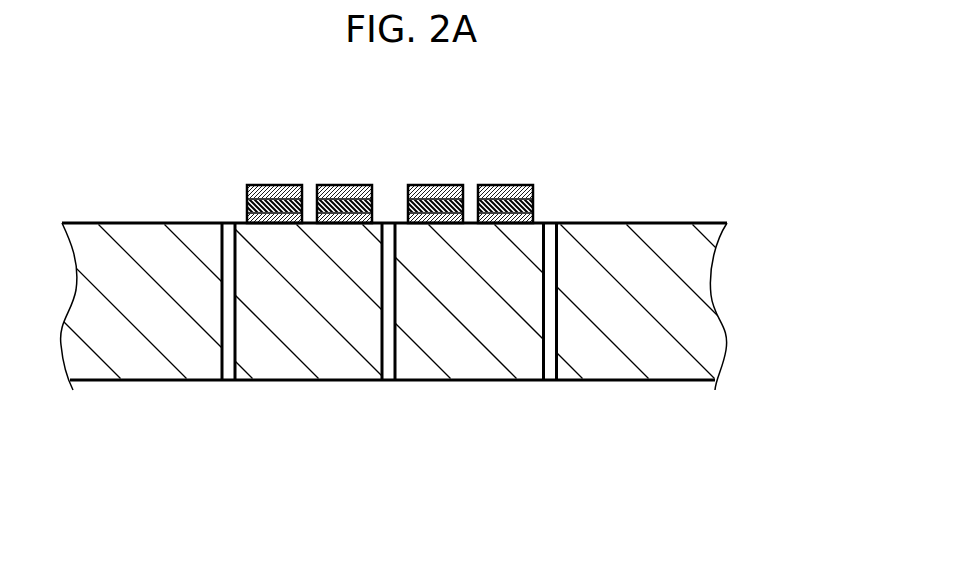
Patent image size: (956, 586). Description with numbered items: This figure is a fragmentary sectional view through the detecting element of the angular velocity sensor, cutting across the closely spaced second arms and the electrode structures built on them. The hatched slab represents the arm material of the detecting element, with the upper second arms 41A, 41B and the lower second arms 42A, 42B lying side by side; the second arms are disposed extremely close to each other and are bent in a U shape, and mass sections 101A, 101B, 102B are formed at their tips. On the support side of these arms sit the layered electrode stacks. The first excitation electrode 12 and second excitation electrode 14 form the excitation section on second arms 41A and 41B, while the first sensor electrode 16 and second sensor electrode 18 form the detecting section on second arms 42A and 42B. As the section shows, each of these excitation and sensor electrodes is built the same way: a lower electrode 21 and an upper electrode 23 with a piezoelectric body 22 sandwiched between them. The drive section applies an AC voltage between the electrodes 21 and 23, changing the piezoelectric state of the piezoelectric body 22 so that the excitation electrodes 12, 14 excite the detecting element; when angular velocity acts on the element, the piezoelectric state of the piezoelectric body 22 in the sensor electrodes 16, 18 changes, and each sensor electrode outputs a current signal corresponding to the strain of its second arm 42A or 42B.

The first excitation electrode 12 is at (543, 182).
The first sensor electrode 16 is at (599, 141).
The second excitation electrode 14 is at (237, 182).
The second sensor electrode 18 is at (179, 141).
The electrode 21 is at (317, 218).
The piezoelectric body 22 is at (317, 202).
The electrode 23 is at (317, 191).
The upper second arm 41A is at (423, 340).
The lower second arm 42A is at (525, 363).
The upper second arm 41B is at (423, 340).
The lower second arm 42B is at (328, 365).
The mass section 101A is at (424, 340).
The mass section 101B is at (677, 256).
The mass section 102B is at (130, 363).